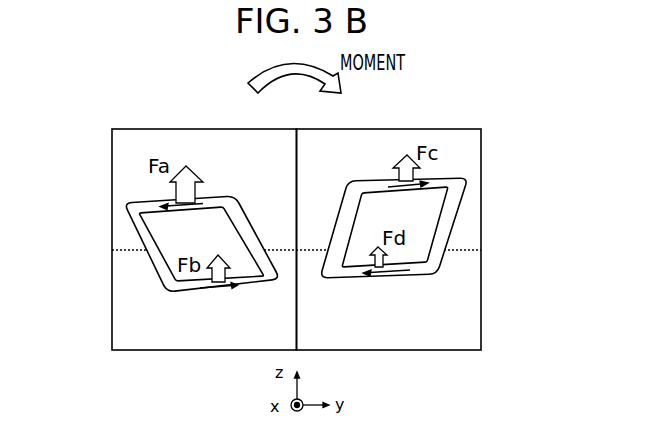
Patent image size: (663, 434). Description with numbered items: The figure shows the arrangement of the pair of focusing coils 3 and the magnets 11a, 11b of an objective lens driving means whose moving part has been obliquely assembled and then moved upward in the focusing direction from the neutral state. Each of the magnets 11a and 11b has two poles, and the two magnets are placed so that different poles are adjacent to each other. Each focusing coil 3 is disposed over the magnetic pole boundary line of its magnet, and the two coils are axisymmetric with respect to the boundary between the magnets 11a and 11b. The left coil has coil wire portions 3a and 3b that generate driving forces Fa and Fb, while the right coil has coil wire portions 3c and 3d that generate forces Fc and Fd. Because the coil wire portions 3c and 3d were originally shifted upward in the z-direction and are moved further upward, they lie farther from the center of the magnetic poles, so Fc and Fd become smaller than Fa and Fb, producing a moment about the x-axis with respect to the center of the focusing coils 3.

The magnet 11a is at (172, 142).
The magnet 11b is at (438, 140).
The focusing coil 3 is at (150, 257).
The coil wire portion 3a is at (143, 207).
The coil wire portion 3b is at (188, 290).
The coil wire portion 3c is at (440, 178).
The coil wire portion 3d is at (410, 272).